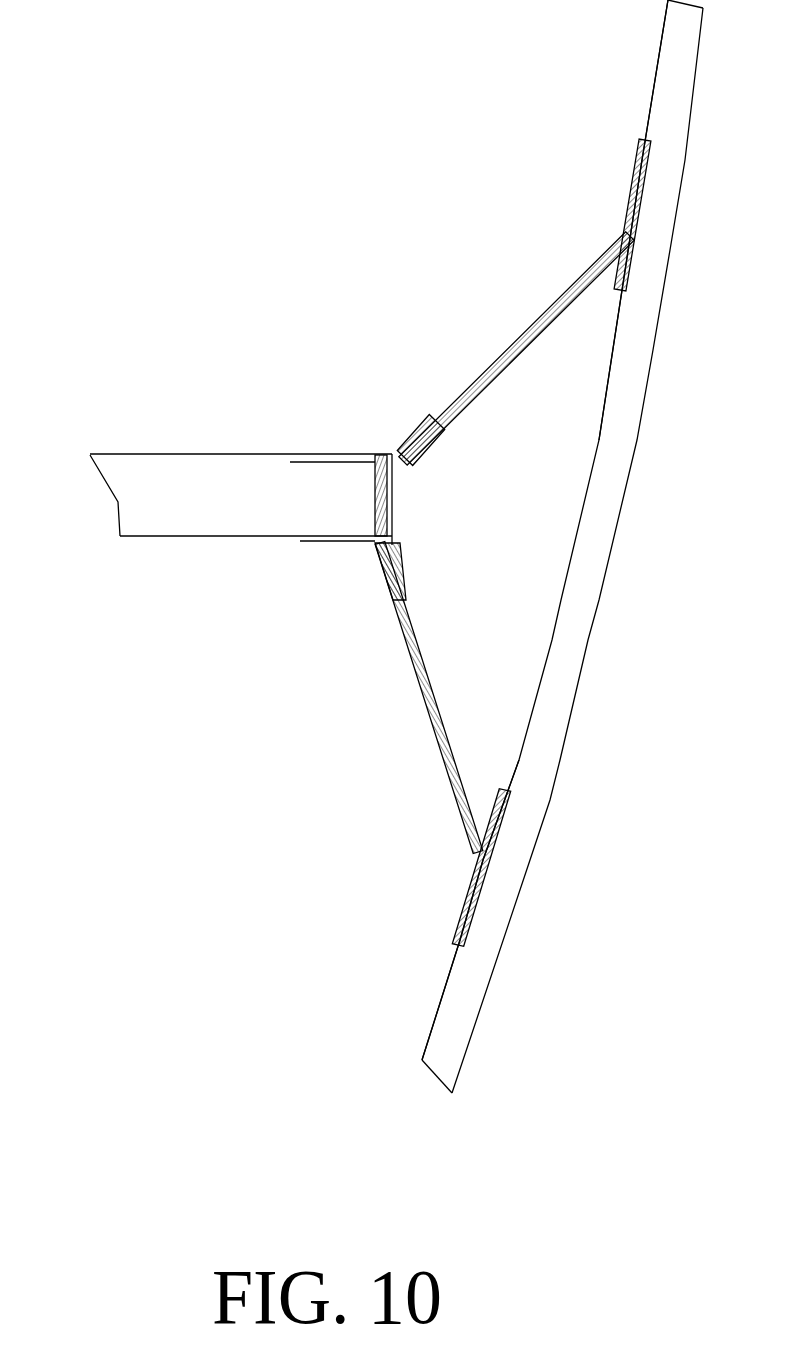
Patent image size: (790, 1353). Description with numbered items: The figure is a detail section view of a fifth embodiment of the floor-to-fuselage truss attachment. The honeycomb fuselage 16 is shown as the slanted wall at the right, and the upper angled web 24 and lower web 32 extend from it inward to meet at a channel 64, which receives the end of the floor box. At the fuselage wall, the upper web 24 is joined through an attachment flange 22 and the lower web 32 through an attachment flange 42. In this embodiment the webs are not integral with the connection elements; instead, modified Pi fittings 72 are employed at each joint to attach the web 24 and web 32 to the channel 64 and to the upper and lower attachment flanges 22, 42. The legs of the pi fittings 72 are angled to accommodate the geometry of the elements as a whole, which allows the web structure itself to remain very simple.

The honeycomb fuselage 16 is at (439, 1015).
The attachment flange 22 is at (638, 170).
The angled web 24 is at (503, 352).
The web 32 is at (424, 688).
The attachment flange 42 is at (474, 921).
The channel 64 is at (410, 513).
The modified Pi fitting 72 is at (593, 246).